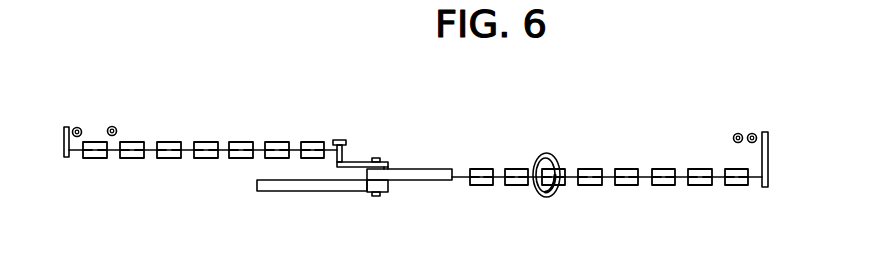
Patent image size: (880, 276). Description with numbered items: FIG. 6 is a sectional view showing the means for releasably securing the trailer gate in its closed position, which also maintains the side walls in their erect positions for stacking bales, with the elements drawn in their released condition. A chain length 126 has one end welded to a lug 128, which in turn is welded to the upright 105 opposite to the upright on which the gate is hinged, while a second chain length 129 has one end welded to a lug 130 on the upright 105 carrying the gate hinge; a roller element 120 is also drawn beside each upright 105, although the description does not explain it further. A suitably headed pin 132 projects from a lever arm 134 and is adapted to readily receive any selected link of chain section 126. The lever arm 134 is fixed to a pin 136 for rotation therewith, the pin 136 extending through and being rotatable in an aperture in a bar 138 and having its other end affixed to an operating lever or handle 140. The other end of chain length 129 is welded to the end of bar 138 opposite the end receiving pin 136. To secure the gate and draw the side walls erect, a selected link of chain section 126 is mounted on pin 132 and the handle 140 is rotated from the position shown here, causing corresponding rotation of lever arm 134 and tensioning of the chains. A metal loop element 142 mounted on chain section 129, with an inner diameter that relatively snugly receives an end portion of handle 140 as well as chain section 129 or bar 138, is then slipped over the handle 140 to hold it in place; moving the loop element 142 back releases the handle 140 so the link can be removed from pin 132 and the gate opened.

The upright 105 is at (78, 127).
The rollers 120 is at (118, 132).
The chain length 126 is at (167, 159).
The lug 128 is at (65, 152).
The second chain length 129 is at (482, 168).
The lug 130 is at (768, 167).
The headed pin 132 is at (343, 140).
The lever arm 134 is at (355, 162).
The pin 136 is at (380, 158).
The bar 138 is at (410, 181).
The operating lever or handle 140 is at (286, 192).
The metal loop element 142 is at (540, 196).